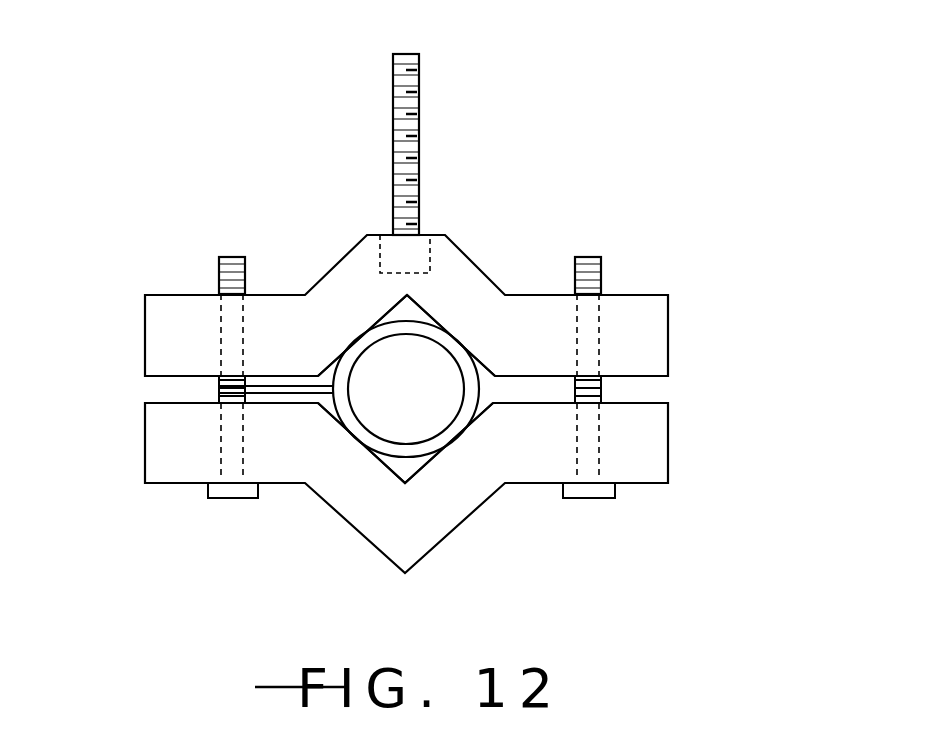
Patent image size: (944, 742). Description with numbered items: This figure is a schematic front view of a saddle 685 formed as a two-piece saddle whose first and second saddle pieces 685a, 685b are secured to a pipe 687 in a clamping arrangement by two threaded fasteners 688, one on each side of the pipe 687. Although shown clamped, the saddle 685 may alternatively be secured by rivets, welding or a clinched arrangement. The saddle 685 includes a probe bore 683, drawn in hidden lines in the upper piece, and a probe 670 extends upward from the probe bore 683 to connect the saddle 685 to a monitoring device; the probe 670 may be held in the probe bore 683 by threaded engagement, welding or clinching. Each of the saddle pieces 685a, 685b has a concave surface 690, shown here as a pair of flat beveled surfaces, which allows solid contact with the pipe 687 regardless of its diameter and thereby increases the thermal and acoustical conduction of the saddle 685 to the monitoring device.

The probe 670 is at (419, 107).
The probe bore 683 is at (447, 252).
The saddle 685 is at (160, 543).
The first saddle piece 685a is at (668, 326).
The second saddle piece 685b is at (668, 468).
The pipe 687 is at (219, 386).
The threaded fasteners 688 is at (218, 268).
The concave surface 690 is at (416, 306).